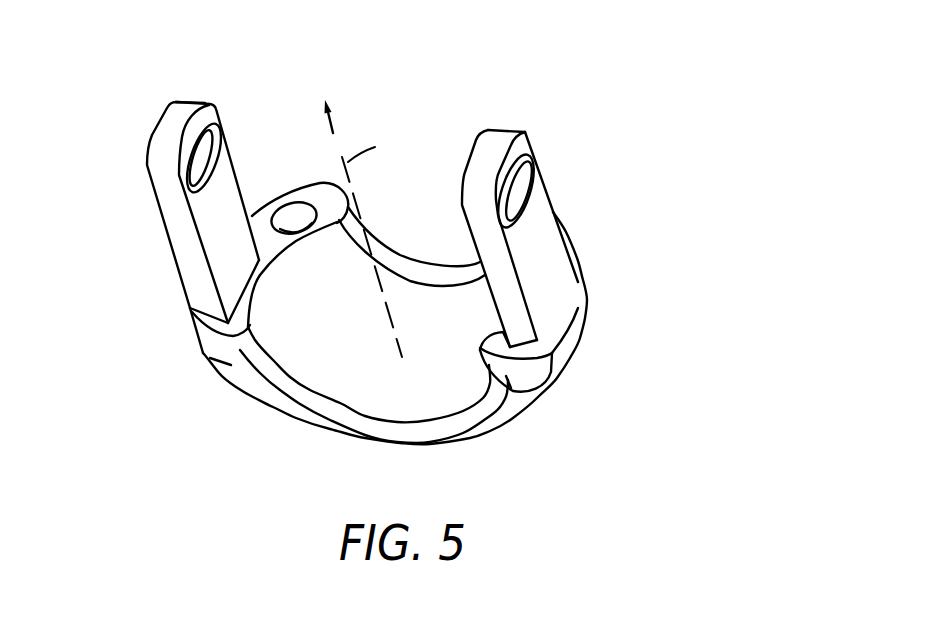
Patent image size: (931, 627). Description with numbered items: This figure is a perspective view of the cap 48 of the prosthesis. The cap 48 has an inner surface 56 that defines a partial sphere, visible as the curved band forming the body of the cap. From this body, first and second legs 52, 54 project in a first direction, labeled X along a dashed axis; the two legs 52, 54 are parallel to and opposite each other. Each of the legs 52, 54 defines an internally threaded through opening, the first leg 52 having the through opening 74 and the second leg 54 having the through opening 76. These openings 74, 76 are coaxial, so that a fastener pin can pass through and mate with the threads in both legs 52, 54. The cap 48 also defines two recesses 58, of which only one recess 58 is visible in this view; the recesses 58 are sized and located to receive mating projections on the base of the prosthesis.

The cap 48 is at (687, 125).
The first leg 52 is at (167, 213).
The second leg 54 is at (537, 258).
The inner surface 56 is at (306, 352).
The recess 58 is at (284, 221).
The through opening 74 is at (205, 152).
The through opening 76 is at (521, 179).